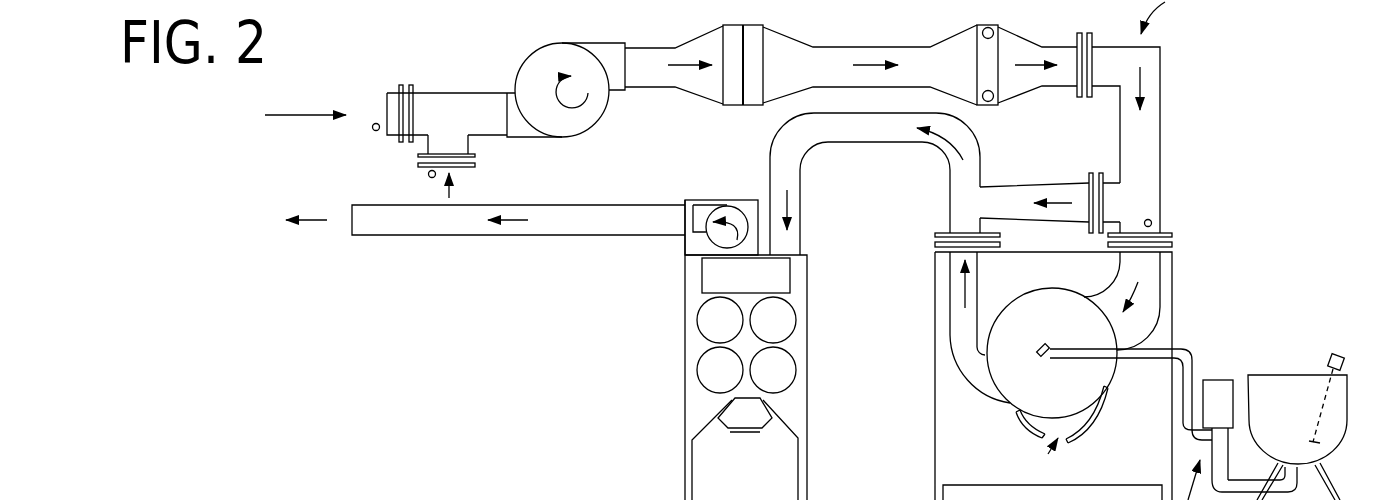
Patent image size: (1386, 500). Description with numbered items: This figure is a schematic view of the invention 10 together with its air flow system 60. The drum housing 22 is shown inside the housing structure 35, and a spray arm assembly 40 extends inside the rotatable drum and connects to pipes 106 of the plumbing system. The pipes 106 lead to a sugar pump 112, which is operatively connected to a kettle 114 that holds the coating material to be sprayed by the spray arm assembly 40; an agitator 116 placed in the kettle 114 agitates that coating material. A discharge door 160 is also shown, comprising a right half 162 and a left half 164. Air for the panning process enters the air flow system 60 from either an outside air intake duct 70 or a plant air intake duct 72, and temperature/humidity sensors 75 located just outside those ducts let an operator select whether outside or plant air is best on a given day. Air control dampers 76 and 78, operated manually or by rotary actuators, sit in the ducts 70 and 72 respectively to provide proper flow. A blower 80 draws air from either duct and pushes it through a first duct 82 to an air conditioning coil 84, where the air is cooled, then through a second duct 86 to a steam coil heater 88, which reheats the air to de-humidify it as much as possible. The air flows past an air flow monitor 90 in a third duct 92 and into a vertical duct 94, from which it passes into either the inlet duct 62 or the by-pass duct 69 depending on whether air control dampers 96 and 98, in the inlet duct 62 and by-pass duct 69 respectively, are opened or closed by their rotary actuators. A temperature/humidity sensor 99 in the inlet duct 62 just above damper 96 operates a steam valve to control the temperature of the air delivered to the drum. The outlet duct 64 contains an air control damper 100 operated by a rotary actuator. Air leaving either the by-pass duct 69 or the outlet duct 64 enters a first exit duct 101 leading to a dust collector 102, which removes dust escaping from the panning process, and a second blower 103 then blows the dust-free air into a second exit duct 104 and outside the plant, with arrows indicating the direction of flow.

The invention 10 is at (1239, 66).
The drum housing 22 is at (1118, 372).
The housing structure 35 is at (935, 470).
The spray arm assembly 40 is at (1040, 347).
The air flow system 60 is at (1169, 17).
The inlet duct 62 is at (1150, 315).
The outlet duct 64 is at (963, 397).
The by-pass duct 69 is at (1037, 183).
The outside air intake duct 70 is at (389, 93).
The plant air intake duct 72 is at (461, 143).
The temperature/humidity sensors 75 is at (429, 175).
The air control damper 76 is at (412, 88).
The air control damper 78 is at (474, 168).
The blower 80 is at (557, 57).
The first duct 82 is at (658, 44).
The air conditioning coil 84 is at (757, 24).
The second duct 86 is at (903, 46).
The steam coil heater 88 is at (988, 26).
The air flow monitor 90 is at (1090, 33).
The third duct 92 is at (1030, 39).
The vertical duct 94 is at (1147, 145).
The air control damper 96 is at (1165, 236).
The air control damper 98 is at (1093, 173).
The temperature/humidity sensor 99 is at (1150, 220).
The air control damper 100 is at (933, 236).
The first exit duct 101 is at (887, 143).
The dust collector 102 is at (693, 345).
The second blower 103 is at (733, 208).
The second exit duct 104 is at (585, 222).
The pipes 106 is at (1180, 347).
The sugar pump 112 is at (1222, 380).
The kettle 114 is at (1343, 427).
The agitator 116 is at (1342, 353).
The discharge door 160 is at (1048, 454).
The right half 162 is at (1100, 425).
The left half 164 is at (1033, 432).